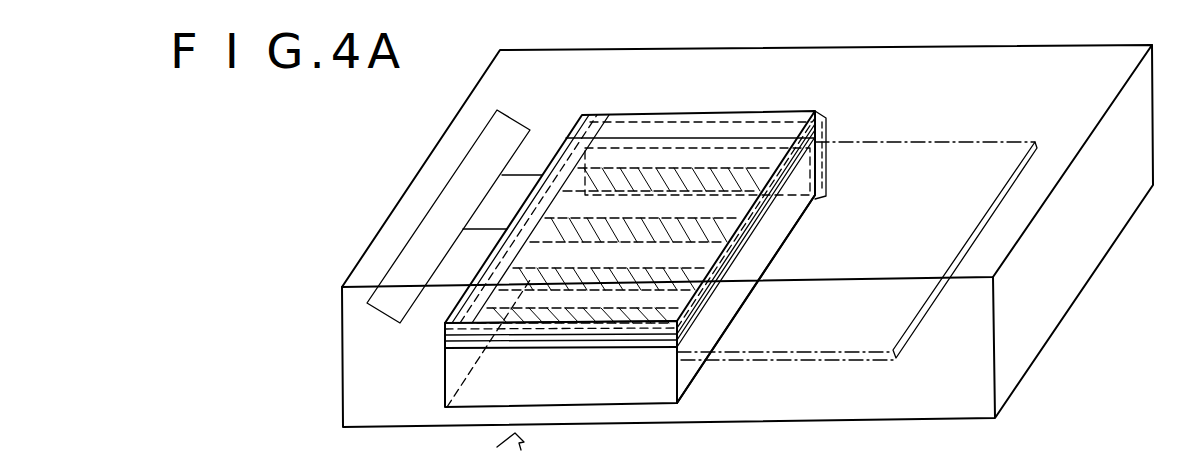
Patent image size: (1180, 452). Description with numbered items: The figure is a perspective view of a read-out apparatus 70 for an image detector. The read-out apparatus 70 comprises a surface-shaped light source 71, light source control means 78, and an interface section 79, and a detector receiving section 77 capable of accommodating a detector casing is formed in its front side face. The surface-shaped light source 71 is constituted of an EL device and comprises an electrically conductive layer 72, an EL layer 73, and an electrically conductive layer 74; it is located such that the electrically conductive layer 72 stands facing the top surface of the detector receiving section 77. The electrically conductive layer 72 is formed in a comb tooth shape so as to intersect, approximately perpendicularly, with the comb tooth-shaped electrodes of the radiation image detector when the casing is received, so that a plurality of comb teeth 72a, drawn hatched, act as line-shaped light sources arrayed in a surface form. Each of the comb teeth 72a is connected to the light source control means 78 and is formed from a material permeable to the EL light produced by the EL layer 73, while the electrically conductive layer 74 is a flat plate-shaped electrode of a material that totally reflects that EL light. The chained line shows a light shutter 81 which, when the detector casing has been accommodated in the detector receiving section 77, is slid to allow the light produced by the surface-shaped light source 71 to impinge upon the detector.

The read-out apparatus 70 is at (388, 180).
The surface-shaped light source 71 is at (581, 261).
The electrically conductive layer 72 is at (445, 386).
The comb teeth 72a is at (545, 170).
The EL layer 73 is at (445, 338).
The electrically conductive layer 74 is at (445, 325).
The detector receiving section 77 is at (667, 384).
The light source control means 78 is at (510, 112).
The interface section 79 is at (826, 122).
The light shutter 81 is at (908, 332).